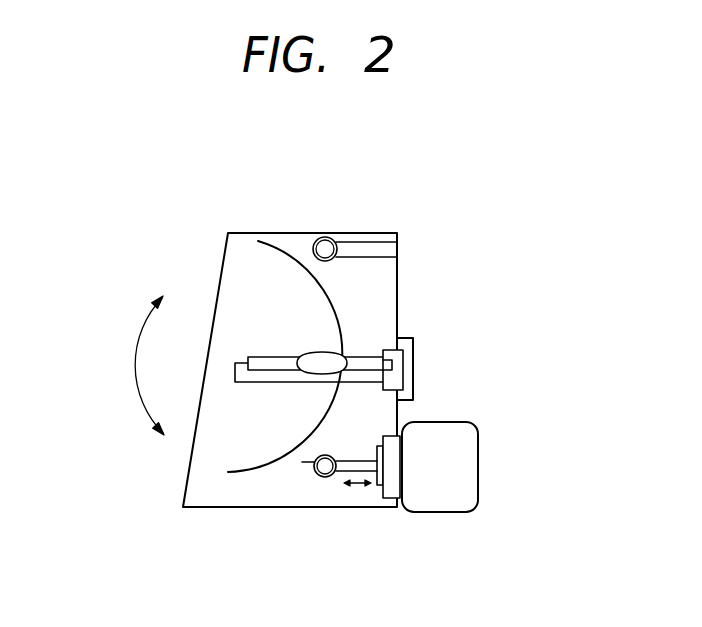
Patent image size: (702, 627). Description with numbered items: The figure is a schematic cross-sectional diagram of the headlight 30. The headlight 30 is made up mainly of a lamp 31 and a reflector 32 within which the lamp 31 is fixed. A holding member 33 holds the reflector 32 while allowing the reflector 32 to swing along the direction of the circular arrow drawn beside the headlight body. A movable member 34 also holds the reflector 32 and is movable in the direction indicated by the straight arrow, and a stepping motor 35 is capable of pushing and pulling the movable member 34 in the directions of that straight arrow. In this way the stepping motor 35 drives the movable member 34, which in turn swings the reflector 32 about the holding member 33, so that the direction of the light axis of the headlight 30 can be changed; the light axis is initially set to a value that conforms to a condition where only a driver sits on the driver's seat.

The headlight 30 is at (248, 216).
The lamp 31 is at (327, 356).
The reflector 32 is at (355, 287).
The holding member 33 is at (360, 247).
The movable member 34 is at (341, 471).
The stepping motor 35 is at (445, 428).